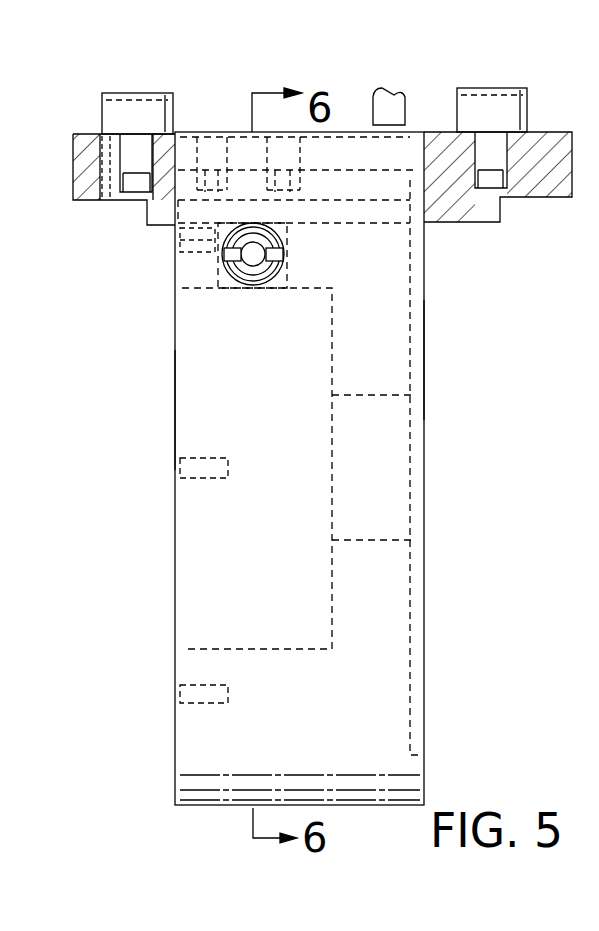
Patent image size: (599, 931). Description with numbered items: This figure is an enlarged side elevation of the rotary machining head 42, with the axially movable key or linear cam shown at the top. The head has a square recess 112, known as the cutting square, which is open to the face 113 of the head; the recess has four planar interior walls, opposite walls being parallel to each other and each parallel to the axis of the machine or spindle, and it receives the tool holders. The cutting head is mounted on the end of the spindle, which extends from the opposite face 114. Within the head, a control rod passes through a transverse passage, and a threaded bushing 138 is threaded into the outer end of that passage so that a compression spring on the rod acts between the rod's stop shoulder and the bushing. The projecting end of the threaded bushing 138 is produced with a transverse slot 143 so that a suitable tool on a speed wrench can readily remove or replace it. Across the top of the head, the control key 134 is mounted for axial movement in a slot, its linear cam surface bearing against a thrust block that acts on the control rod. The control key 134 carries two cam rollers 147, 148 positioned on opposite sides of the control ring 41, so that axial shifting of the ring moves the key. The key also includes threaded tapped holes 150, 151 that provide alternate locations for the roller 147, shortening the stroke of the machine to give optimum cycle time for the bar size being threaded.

The control ring 41 is at (398, 99).
The rotary machining head 42 is at (434, 280).
The square recess 112 is at (207, 290).
The face 113 is at (175, 412).
The opposite face 114 is at (424, 365).
The control key 134 is at (545, 148).
The threaded bushing 138 is at (222, 258).
The transverse slot 143 is at (284, 257).
The cam roller 147 is at (173, 112).
The cam roller 148 is at (527, 100).
The threaded tapped hole 150 is at (207, 118).
The threaded tapped hole 151 is at (300, 180).